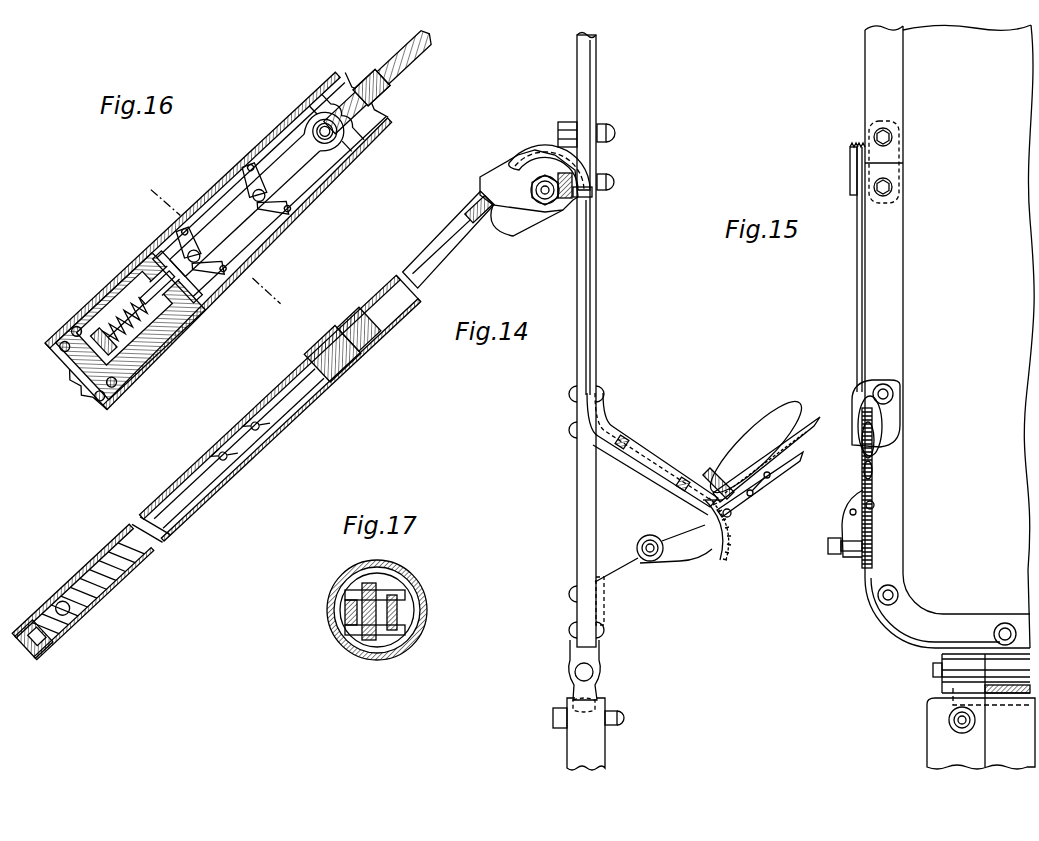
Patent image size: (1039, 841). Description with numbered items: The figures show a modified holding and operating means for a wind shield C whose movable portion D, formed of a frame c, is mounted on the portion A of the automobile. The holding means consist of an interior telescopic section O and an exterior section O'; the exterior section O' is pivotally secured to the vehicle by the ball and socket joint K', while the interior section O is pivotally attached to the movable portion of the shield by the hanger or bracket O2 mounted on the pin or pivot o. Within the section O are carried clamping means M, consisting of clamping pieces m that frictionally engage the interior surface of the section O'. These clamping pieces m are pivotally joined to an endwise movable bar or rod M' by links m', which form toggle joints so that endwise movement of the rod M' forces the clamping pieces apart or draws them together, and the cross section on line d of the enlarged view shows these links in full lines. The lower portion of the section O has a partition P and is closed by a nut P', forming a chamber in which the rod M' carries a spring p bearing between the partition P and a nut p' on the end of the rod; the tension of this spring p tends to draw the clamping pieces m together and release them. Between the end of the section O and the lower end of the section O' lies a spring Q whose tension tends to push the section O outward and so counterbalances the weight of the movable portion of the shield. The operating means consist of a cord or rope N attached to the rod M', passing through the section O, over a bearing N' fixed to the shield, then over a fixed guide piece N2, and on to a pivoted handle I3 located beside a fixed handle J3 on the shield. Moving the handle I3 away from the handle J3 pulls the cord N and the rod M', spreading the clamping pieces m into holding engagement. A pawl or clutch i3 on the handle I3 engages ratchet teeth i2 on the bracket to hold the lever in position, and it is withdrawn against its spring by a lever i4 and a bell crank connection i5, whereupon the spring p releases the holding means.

In FIG. 14, the portion of the automobile A is at (588, 705).
In FIG. 15, the portion of the automobile A is at (981, 711).
In FIG. 14, the wind shield C is at (635, 348).
In FIG. 15, the wind shield C is at (868, 141).
In FIG. 14, the frame c is at (586, 340).
In FIG. 15, the frame c is at (947, 337).
In FIG. 15, the movable portion of the wind shield D is at (968, 336).
In FIG. 16, the cord or rope N is at (380, 81).
In FIG. 14, the cord or rope N is at (522, 181).
In FIG. 15, the cord or rope N is at (843, 269).
In FIG. 14, the bearing N' is at (550, 158).
In FIG. 15, the bearing N' is at (844, 169).
In FIG. 14, the fixed guide piece N2 is at (610, 437).
In FIG. 15, the fixed guide piece N2 is at (852, 402).
In FIG. 16, the interior telescopic section O is at (411, 219).
In FIG. 17, the interior telescopic section O is at (377, 620).
In FIG. 16, the exterior telescopic section O' is at (216, 425).
In FIG. 17, the exterior telescopic section O' is at (380, 615).
In FIG. 14, the hanger or bracket O2 is at (527, 220).
In FIG. 14, the pin or pivot o is at (547, 205).
In FIG. 16, the section line d is at (212, 243).
In FIG. 16, the clamping means M is at (224, 272).
In FIG. 17, the clamping means M is at (403, 613).
In FIG. 16, the endwise movable bar or rod M' is at (252, 316).
In FIG. 16, the clamping pieces m is at (271, 189).
In FIG. 17, the clamping pieces m is at (375, 612).
In FIG. 16, the links m' is at (238, 297).
In FIG. 17, the links m' is at (385, 609).
In FIG. 16, the partition P is at (175, 297).
In FIG. 16, the nut P' is at (131, 329).
In FIG. 16, the spring p is at (136, 320).
In FIG. 16, the nut p' is at (118, 329).
In FIG. 16, the spring Q is at (80, 380).
In FIG. 16, the ball and socket joint K' is at (80, 596).
In FIG. 14, the fixed lever or handle portion J3 is at (756, 447).
In FIG. 15, the fixed lever or handle portion J3 is at (881, 412).
In FIG. 14, the pivoted lever or handle portion I3 is at (806, 440).
In FIG. 15, the pivoted lever or handle portion I3 is at (876, 441).
In FIG. 14, the ratchet teeth i2 is at (729, 538).
In FIG. 15, the ratchet teeth i2 is at (873, 540).
In FIG. 14, the pawl or clutch i3 is at (731, 513).
In FIG. 15, the pawl or clutch i3 is at (875, 504).
In FIG. 14, the lever i4 is at (792, 468).
In FIG. 15, the lever i4 is at (873, 462).
In FIG. 14, the bell crank connection i5 is at (754, 496).